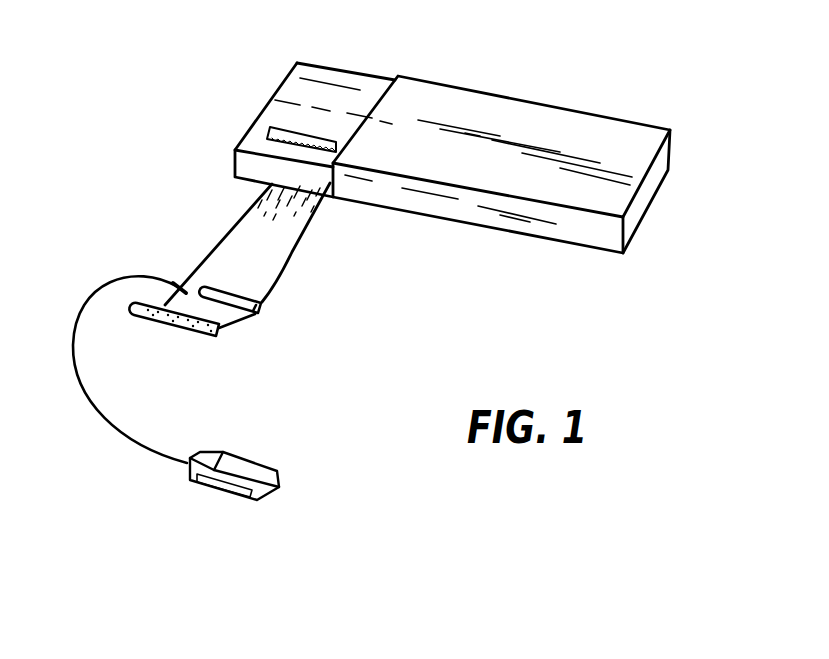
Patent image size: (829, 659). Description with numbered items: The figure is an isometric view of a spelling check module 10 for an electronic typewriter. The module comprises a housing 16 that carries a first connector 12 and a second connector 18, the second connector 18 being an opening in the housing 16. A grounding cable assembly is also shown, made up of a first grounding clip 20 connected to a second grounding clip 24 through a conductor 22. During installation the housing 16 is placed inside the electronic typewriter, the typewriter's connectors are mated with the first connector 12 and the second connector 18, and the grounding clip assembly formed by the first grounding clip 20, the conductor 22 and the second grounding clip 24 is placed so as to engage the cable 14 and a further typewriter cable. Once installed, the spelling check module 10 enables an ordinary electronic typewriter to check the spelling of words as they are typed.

The spelling check module 10 is at (533, 90).
The first connector 12 is at (270, 128).
The cable 14 is at (285, 248).
The housing 16 is at (332, 82).
The second connector 18 is at (202, 337).
The first grounding clip 20 is at (262, 314).
The conductor 22 is at (80, 387).
The second grounding clip 24 is at (261, 465).